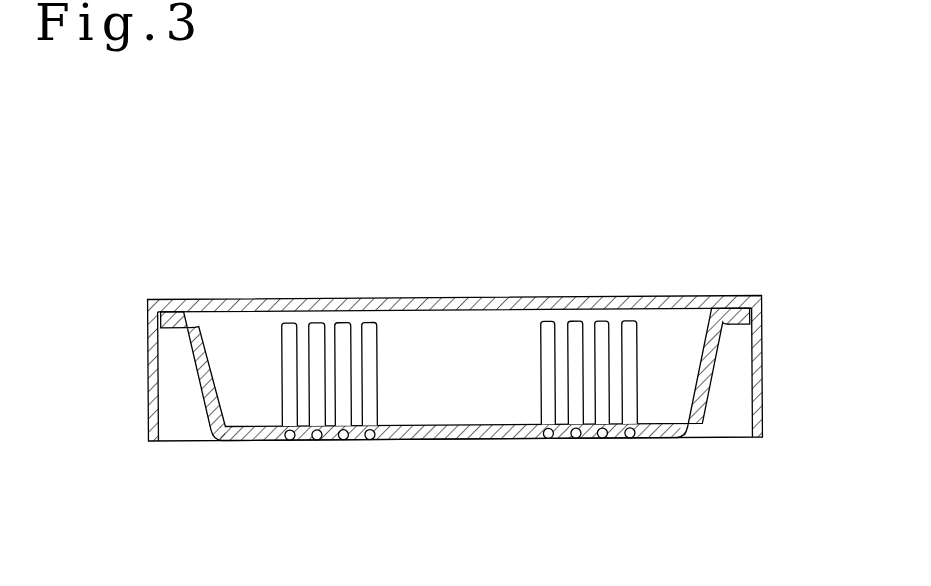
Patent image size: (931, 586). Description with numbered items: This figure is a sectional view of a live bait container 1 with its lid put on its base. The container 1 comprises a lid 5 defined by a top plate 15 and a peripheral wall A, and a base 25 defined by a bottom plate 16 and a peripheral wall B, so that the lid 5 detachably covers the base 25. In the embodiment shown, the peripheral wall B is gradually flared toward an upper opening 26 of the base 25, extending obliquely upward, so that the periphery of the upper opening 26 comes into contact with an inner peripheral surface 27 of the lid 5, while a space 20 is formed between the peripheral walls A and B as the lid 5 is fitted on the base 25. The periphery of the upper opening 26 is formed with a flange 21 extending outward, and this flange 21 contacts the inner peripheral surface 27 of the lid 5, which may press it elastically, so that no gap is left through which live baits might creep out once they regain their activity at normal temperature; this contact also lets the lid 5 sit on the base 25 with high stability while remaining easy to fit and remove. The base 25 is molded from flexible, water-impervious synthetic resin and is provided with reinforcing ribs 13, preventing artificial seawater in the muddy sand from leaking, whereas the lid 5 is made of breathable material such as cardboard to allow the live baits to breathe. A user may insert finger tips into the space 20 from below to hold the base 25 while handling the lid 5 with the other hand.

The container 1 is at (763, 285).
The lid 5 is at (757, 328).
The reinforcing ribs 13 is at (315, 440).
The top plate 15 is at (628, 298).
The bottom plate 16 is at (445, 442).
The space 20 is at (168, 430).
The flange 21 is at (178, 320).
The base 25 is at (517, 440).
The upper opening 26 is at (672, 322).
The inner peripheral surface 27 is at (748, 356).
The peripheral wall A is at (148, 368).
The peripheral wall B is at (205, 402).